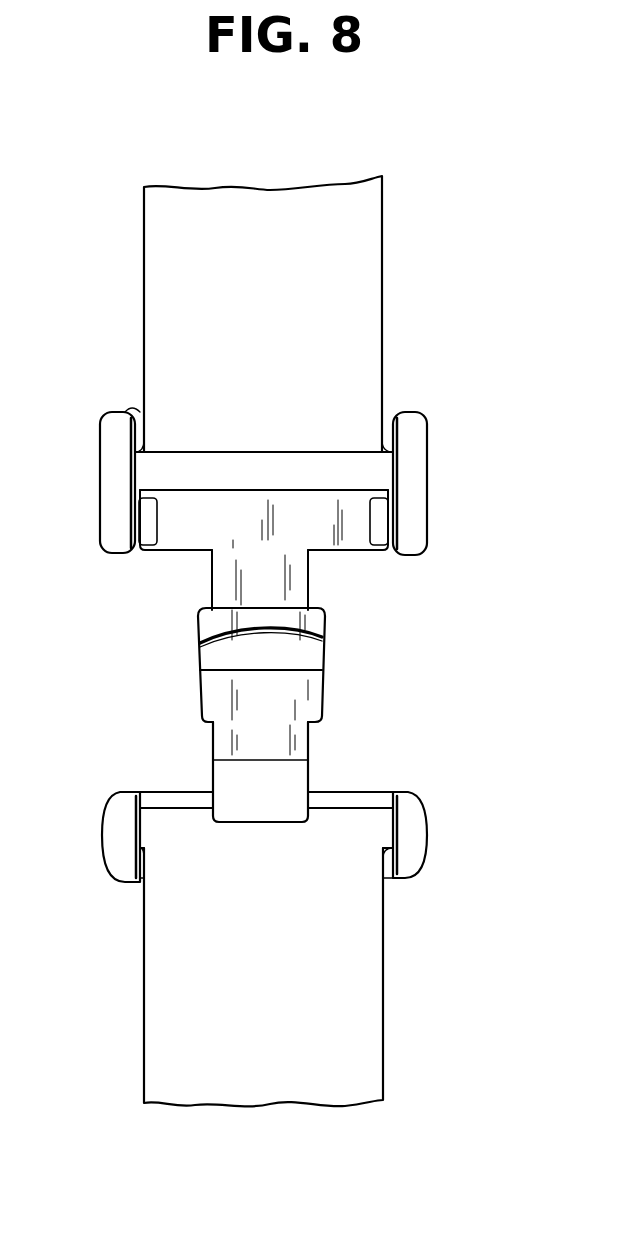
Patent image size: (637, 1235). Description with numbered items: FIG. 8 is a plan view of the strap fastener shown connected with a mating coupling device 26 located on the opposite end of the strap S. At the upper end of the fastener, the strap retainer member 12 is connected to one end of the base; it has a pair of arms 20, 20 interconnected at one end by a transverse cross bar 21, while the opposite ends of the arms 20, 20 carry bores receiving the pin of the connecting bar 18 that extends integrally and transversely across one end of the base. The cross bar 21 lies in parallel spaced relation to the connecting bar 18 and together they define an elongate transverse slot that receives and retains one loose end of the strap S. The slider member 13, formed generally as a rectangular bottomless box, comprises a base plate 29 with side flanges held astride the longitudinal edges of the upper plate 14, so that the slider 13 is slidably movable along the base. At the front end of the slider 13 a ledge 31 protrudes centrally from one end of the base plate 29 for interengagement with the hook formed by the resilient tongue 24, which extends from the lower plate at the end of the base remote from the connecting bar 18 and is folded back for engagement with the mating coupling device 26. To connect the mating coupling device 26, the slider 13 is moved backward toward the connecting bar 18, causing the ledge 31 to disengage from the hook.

The strap S is at (378, 279).
The strap retainer member 12 is at (266, 445).
The slider member 13 is at (303, 698).
The upper plate 14 is at (211, 576).
The connecting bar 18 is at (272, 497).
The arms 20 is at (107, 473).
The cross bar 21 is at (140, 410).
The resilient tongue 24 is at (222, 774).
The mating coupling device 26 is at (428, 828).
The base plate 29 is at (316, 686).
The ledge 31 is at (303, 744).